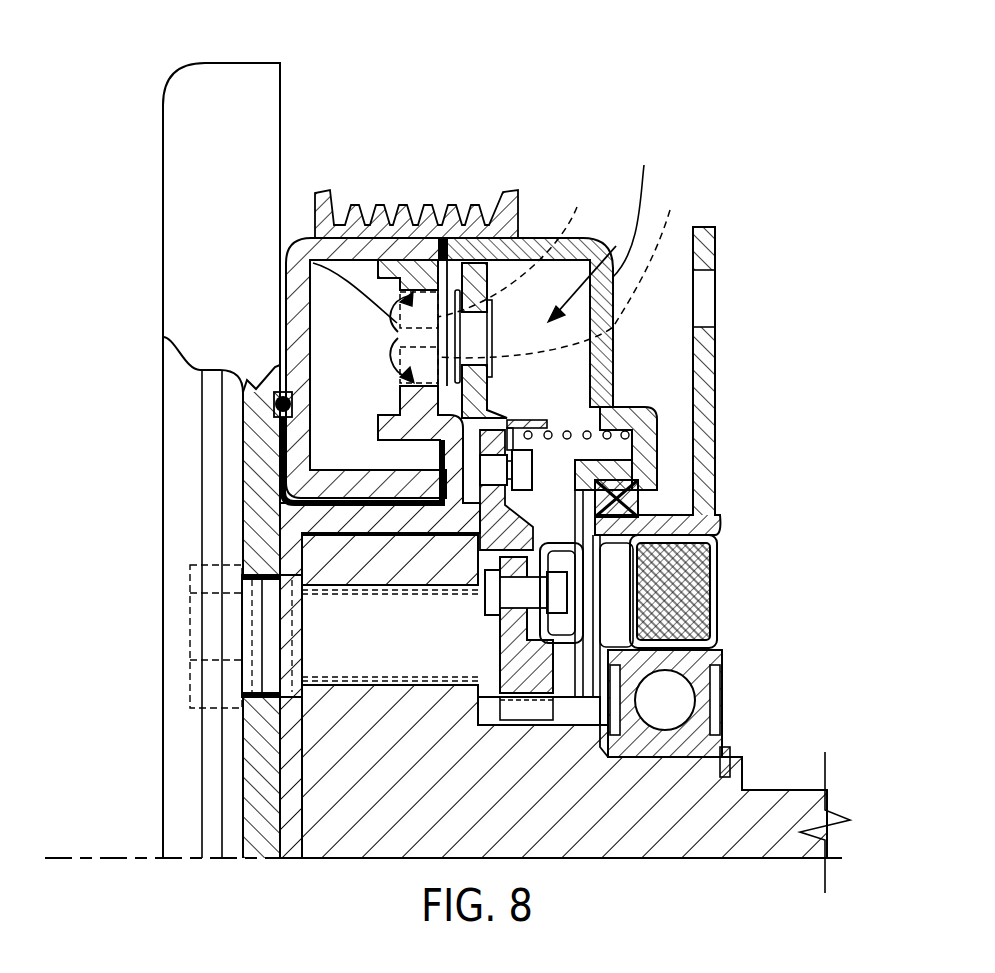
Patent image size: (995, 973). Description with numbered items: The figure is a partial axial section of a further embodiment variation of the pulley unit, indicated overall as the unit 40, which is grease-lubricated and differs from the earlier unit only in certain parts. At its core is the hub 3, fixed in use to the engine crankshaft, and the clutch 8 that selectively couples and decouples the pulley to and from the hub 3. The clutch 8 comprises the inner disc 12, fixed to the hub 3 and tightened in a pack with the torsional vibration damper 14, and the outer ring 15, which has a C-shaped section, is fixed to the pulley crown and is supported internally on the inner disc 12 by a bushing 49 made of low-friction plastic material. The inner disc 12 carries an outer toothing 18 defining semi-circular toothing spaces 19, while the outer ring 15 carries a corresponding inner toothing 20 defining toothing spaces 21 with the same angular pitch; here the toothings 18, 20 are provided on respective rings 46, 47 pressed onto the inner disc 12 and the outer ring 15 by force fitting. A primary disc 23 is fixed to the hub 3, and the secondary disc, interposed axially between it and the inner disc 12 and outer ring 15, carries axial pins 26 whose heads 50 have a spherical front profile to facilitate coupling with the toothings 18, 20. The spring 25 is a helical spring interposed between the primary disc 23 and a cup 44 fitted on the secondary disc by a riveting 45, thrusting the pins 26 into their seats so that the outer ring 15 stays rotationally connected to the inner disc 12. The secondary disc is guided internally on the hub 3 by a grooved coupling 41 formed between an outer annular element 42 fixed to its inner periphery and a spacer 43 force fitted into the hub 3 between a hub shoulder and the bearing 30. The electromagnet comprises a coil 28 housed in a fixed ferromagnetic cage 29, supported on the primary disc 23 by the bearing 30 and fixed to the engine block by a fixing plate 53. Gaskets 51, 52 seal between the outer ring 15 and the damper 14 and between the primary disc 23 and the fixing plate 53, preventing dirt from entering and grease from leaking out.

The hub 3 is at (352, 843).
The clutch 8 is at (633, 203).
The inner disc 12 is at (378, 517).
The torsional vibration damper 14 is at (222, 82).
The outer ring 15 is at (295, 342).
The outer toothing 18 is at (562, 269).
The toothing spaces 19 is at (396, 345).
The inner toothing 20 is at (516, 247).
The toothing spaces 21 is at (310, 263).
The primary disc 23 is at (613, 333).
The spring 25 is at (632, 458).
The axial pins 26 is at (591, 267).
The coil 28 is at (707, 577).
The cage 29 is at (717, 642).
The bearing 30 is at (700, 672).
The pulley unit 40 is at (541, 95).
The grooved coupling 41 is at (545, 710).
The outer annular element 42 is at (553, 660).
The spacer 43 is at (580, 745).
The cup 44 is at (653, 437).
The riveting 45 is at (500, 472).
The ring 46 is at (430, 408).
The ring 47 is at (415, 268).
The bushing 49 is at (258, 495).
The heads 50 is at (433, 303).
The gasket 51 is at (275, 406).
The gasket 52 is at (605, 495).
The fixing plate 53 is at (703, 373).